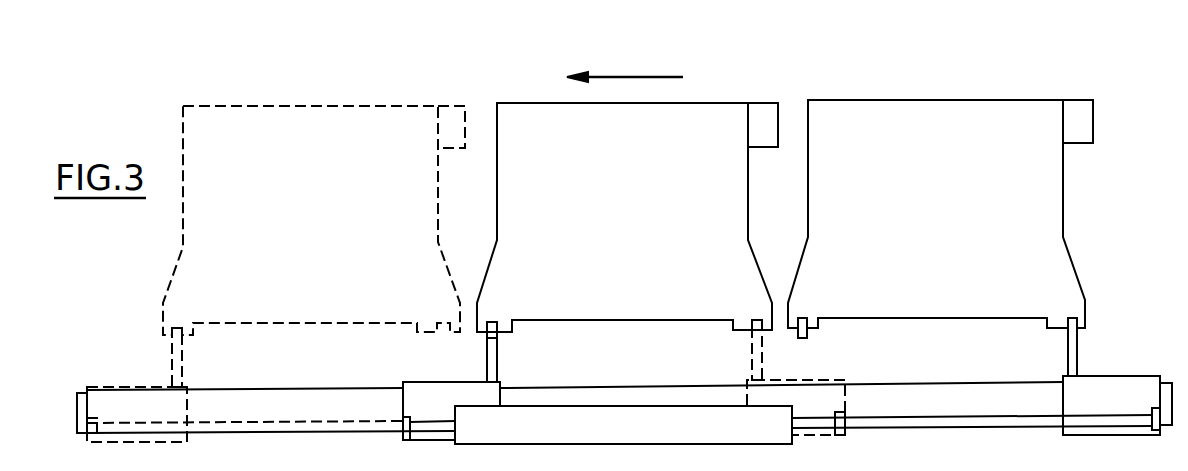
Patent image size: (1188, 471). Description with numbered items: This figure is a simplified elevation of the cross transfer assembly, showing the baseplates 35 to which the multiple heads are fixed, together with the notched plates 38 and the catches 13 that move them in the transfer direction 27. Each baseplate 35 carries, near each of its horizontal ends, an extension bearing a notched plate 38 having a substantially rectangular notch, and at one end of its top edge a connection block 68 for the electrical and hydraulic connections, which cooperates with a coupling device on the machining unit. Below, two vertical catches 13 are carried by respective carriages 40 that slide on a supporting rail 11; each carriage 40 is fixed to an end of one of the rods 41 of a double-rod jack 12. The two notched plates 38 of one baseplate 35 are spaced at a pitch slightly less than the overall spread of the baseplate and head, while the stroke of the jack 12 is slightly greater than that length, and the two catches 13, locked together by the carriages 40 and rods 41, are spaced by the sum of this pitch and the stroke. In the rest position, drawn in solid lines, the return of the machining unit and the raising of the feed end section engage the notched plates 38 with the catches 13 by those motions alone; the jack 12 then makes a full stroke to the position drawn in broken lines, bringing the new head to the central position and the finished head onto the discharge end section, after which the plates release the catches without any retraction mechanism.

The supporting rail 11 is at (347, 407).
The double-rod jack 12 is at (618, 425).
The vertical catch 13 is at (182, 360).
The direction of cross transfer 27 is at (635, 77).
The baseplate 35 is at (438, 200).
The notched plate 38 is at (489, 322).
The carriage 40 is at (130, 387).
The rod 41 is at (433, 425).
The connection block 68 is at (450, 102).